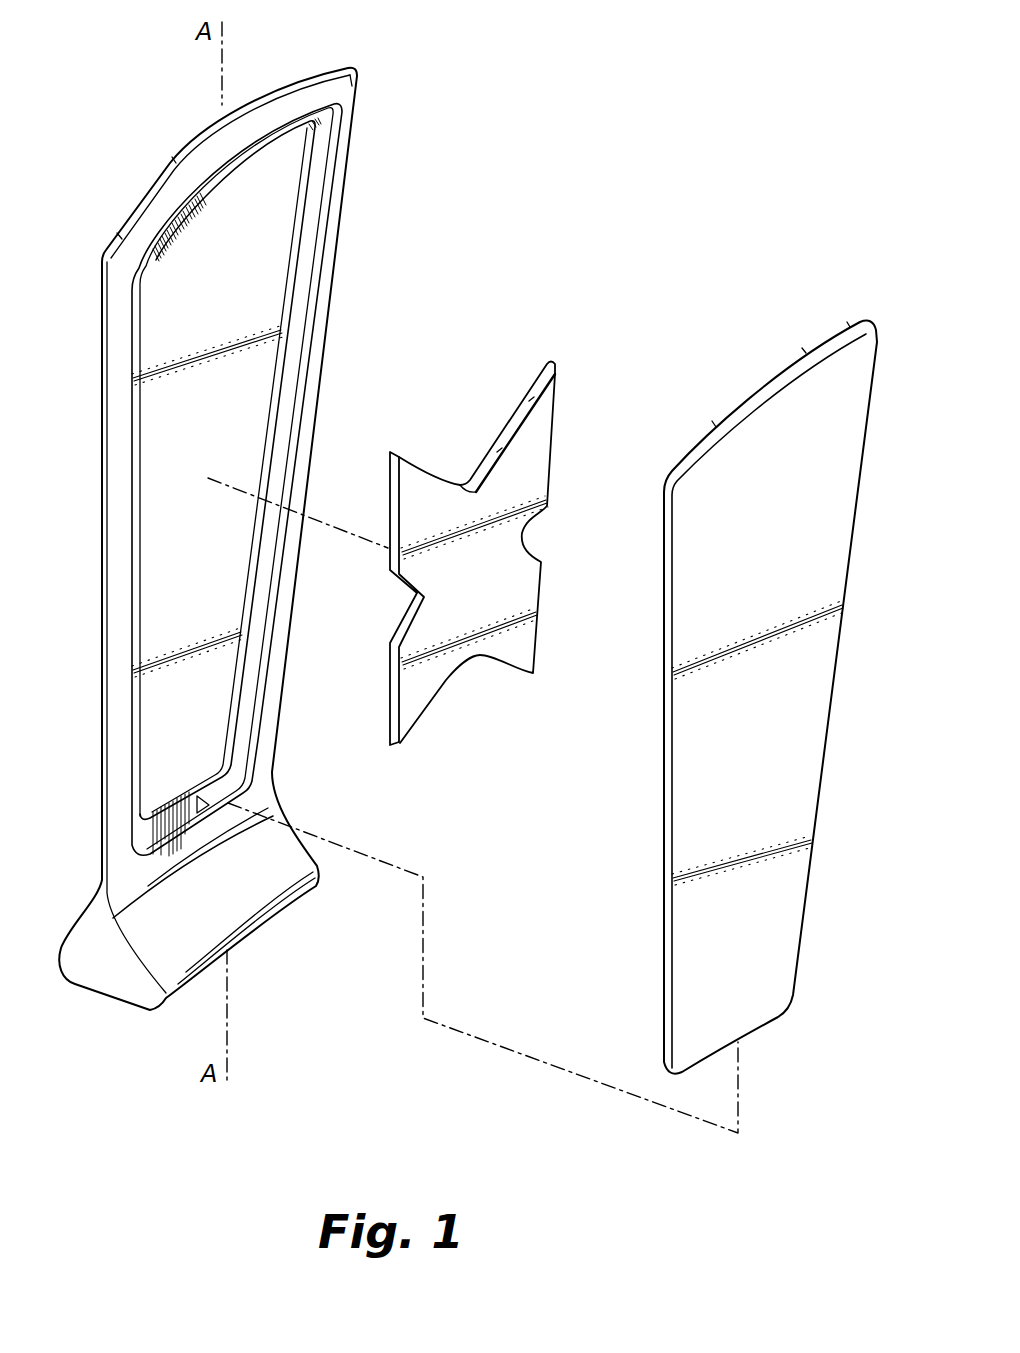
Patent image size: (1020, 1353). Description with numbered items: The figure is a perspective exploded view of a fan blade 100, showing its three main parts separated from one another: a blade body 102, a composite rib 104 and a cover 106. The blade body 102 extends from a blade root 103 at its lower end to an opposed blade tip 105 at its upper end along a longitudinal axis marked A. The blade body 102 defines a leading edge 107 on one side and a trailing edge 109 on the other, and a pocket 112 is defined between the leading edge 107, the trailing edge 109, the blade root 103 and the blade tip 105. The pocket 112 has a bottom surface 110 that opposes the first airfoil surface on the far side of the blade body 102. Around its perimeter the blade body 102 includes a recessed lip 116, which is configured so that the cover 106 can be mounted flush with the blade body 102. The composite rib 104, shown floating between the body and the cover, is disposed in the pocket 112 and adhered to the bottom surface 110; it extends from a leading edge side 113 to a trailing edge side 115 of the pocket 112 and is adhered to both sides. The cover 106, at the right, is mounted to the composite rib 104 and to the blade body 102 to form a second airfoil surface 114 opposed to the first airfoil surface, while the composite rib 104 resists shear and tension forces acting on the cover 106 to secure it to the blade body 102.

The fan blade 100 is at (594, 130).
The blade body 102 is at (92, 296).
The blade root 103 is at (258, 918).
The composite rib 104 is at (568, 372).
The blade tip 105 is at (143, 197).
The cover 106 is at (688, 425).
The leading edge 107 is at (103, 550).
The trailing edge 109 is at (345, 218).
The bottom surface 110 is at (270, 283).
The pocket 112 is at (259, 180).
The leading edge side 113 is at (140, 532).
The second airfoil surface 114 is at (820, 690).
The trailing edge side 115 is at (270, 445).
The recessed lip 116 is at (331, 97).